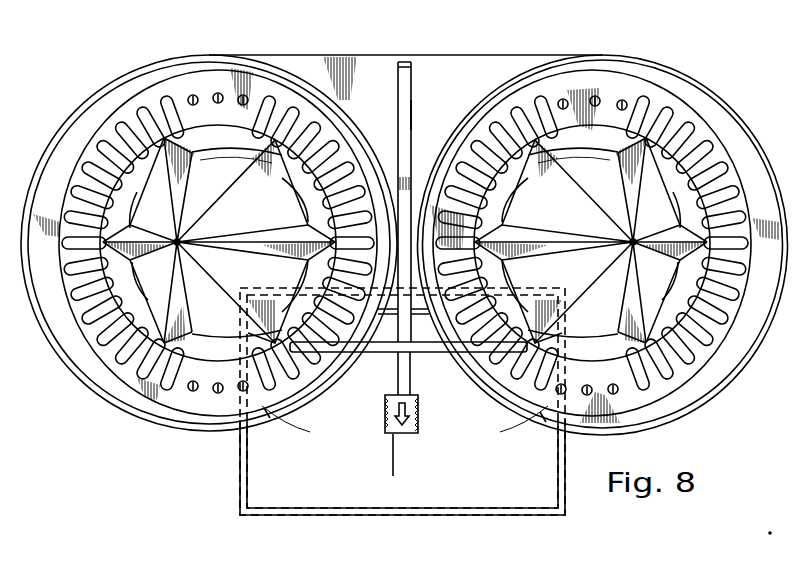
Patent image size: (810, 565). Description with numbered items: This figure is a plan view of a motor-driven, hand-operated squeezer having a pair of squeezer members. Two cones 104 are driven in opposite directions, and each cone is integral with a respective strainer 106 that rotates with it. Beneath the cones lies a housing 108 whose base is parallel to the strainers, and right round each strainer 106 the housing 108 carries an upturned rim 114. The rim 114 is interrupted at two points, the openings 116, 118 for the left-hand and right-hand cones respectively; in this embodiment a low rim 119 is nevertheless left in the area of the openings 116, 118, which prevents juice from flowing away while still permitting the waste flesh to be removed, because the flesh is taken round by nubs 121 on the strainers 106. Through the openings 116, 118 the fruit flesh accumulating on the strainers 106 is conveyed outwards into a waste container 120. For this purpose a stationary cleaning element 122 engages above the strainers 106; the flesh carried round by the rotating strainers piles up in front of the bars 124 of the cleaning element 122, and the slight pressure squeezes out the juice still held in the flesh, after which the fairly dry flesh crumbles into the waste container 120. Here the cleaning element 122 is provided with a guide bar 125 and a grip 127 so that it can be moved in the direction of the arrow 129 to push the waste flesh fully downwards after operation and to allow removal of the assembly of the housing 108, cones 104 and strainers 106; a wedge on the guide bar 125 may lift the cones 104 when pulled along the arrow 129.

The cone 104 is at (405, 240).
The strainer 106 is at (120, 117).
The housing 108 is at (462, 72).
The upturned rim 114 is at (152, 64).
The opening 116 is at (305, 402).
The opening 118 is at (507, 407).
The low rim 119 is at (361, 354).
The waste container 120 is at (402, 401).
The nubs 121 is at (222, 93).
The cleaning element 122 is at (393, 153).
The bars 124 is at (376, 350).
The guide bar 125 is at (416, 113).
The grip 127 is at (375, 468).
The arrow 129 is at (410, 435).